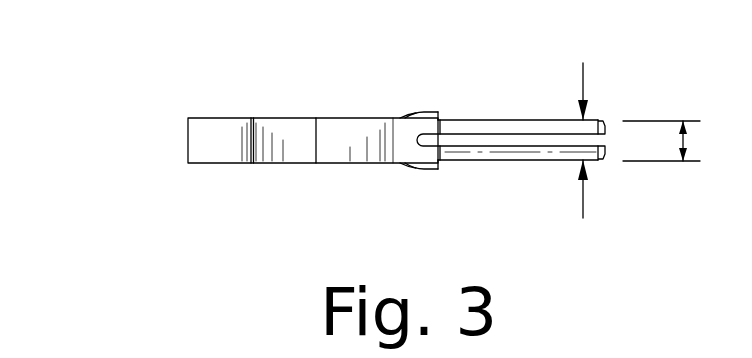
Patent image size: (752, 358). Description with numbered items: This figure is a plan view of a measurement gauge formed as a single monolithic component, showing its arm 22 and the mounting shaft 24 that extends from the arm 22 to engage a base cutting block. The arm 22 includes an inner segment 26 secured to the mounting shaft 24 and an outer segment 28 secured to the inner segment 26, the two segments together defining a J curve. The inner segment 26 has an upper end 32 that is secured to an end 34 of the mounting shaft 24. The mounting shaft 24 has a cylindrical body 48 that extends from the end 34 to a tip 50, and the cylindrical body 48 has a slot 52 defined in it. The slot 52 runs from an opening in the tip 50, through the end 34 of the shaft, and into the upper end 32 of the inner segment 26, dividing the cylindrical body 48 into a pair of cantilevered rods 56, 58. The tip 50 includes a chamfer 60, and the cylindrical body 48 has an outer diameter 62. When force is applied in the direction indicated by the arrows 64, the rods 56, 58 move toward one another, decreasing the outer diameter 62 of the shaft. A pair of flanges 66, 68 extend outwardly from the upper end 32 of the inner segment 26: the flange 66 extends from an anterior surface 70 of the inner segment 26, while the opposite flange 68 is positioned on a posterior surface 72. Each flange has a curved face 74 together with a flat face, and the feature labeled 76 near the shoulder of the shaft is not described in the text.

The arm 22 is at (140, 142).
The mounting shaft 24 is at (552, 84).
The inner segment 26 is at (326, 120).
The outer segment 28 is at (218, 125).
The upper end 32 is at (393, 118).
The end 34 is at (447, 166).
The cylindrical body 48 is at (522, 120).
The tip 50 is at (603, 160).
The slot 52 is at (541, 147).
The cantilevered rod 56 is at (516, 160).
The cantilevered rod 58 is at (485, 120).
The chamfer 60 is at (607, 120).
The outer diameter 62 is at (688, 140).
The arrows 64 is at (583, 78).
The flange 66 is at (432, 168).
The flange 68 is at (433, 113).
The anterior surface 70 is at (372, 163).
The posterior surface 72 is at (358, 118).
The curved face 74 is at (412, 115).
The shoulder 76 is at (440, 117).